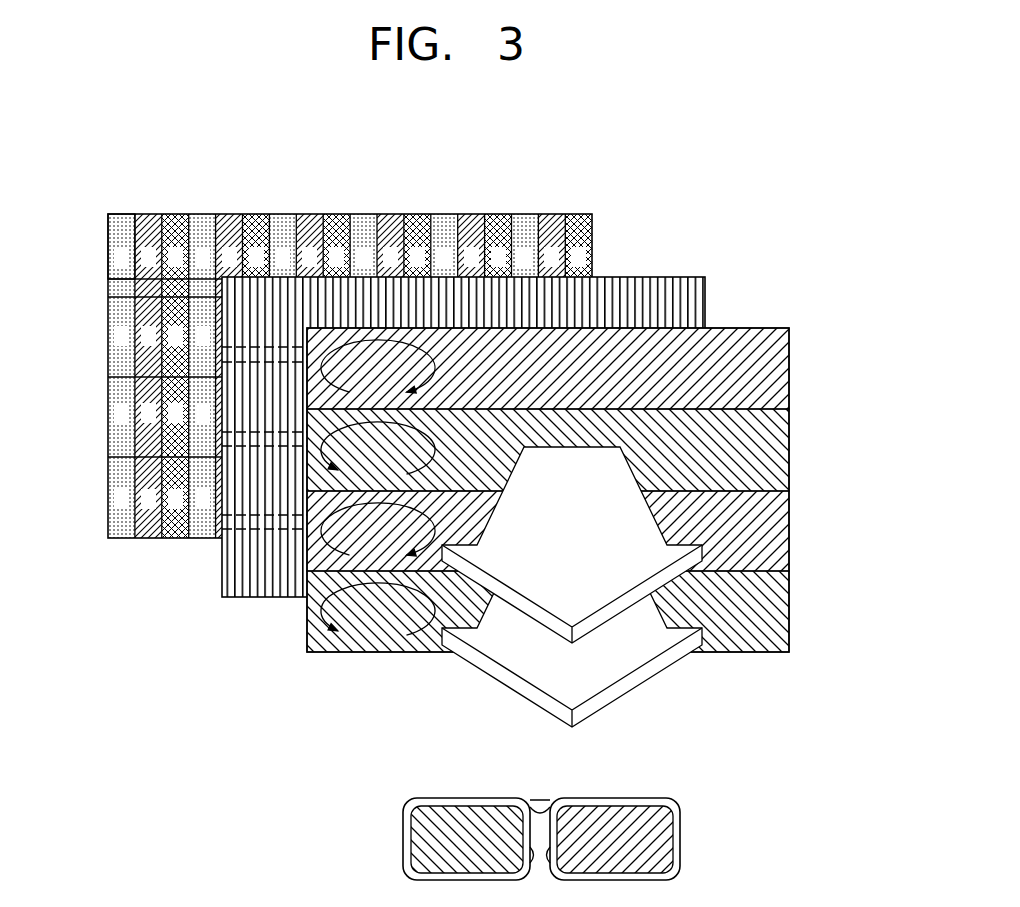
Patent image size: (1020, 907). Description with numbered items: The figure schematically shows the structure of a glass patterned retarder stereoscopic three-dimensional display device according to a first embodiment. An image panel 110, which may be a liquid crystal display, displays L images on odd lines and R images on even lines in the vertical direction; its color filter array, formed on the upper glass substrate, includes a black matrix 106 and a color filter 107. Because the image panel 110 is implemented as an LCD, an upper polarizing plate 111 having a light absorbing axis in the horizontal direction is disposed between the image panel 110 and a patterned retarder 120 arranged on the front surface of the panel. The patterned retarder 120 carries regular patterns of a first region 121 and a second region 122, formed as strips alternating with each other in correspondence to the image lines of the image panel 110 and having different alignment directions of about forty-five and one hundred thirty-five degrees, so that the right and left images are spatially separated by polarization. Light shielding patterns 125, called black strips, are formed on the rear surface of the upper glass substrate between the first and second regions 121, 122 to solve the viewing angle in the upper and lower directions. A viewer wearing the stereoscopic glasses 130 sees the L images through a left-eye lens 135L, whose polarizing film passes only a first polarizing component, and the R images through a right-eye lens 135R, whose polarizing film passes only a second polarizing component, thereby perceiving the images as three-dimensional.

The image panel 110 is at (355, 353).
The color filter 107 is at (108, 239).
The black matrix 106 is at (108, 283).
The light shielding patterns 125 is at (245, 352).
The upper polarizing plate 111 is at (702, 297).
The patterned retarder 120 is at (586, 505).
The first region 121 is at (788, 362).
The second region 122 is at (784, 452).
The 3D glasses 130 is at (578, 813).
The left-eye lens 135L is at (468, 812).
The right-eye lens 135R is at (615, 812).